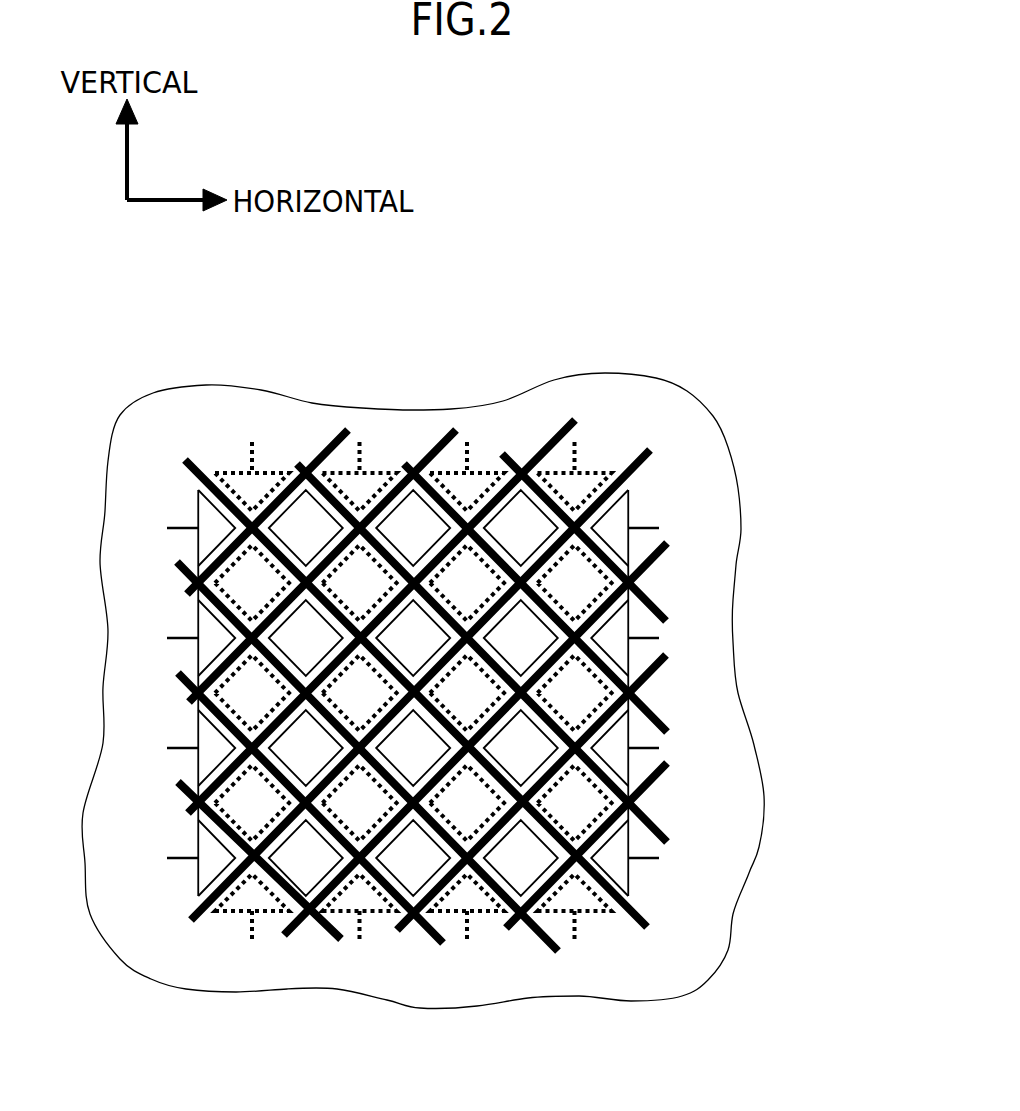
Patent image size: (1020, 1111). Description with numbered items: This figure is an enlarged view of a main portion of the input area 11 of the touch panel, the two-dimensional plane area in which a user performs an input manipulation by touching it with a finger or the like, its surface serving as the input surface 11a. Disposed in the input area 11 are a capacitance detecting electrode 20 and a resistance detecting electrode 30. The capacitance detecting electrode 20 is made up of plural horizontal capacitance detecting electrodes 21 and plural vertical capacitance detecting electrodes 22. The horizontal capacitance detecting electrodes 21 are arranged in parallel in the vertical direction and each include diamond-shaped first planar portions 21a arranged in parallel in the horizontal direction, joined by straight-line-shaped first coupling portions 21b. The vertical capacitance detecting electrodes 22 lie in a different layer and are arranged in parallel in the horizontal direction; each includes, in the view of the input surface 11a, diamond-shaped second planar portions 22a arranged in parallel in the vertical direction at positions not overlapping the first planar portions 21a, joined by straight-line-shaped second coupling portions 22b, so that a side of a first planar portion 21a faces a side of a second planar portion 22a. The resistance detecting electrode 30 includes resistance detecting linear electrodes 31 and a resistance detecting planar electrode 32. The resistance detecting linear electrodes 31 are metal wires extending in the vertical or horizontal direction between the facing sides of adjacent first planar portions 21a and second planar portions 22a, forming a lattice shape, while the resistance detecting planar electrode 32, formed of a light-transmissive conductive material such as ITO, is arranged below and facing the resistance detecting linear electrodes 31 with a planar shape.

The input area 11 is at (643, 395).
The input surface 11a is at (673, 425).
The capacitance detecting electrode 20 is at (298, 301).
The horizontal capacitance detecting electrode 21 is at (257, 347).
The first planar portion 21a is at (296, 517).
The first coupling portion 21b is at (341, 505).
The vertical capacitance detecting electrode 22 is at (528, 347).
The second planar portion 22a is at (456, 580).
The second coupling portion 22b is at (479, 514).
The resistance detecting electrode 30 is at (765, 470).
The resistance detecting linear electrode 31 is at (659, 567).
The resistance detecting planar electrode 32 is at (716, 517).